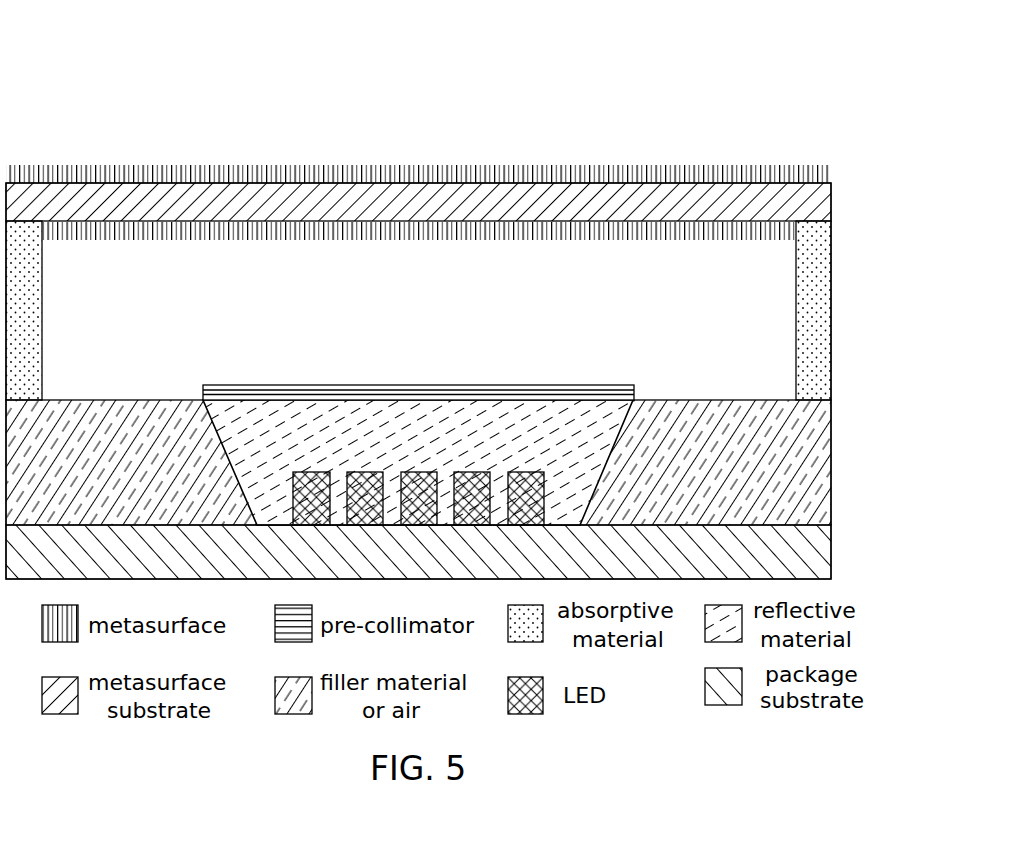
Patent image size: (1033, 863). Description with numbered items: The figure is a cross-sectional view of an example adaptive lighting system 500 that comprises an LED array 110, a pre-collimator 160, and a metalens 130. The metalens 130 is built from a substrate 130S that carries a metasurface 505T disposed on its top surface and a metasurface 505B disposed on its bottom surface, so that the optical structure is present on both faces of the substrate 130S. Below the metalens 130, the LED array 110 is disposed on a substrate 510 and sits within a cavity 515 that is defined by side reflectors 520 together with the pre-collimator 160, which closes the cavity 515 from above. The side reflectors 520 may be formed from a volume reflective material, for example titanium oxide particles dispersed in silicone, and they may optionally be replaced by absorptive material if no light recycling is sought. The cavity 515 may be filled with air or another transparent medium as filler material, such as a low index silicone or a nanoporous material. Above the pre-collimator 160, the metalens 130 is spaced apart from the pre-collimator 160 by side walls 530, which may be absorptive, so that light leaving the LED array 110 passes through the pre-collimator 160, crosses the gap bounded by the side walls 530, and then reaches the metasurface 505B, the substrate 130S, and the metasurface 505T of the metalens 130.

The adaptive lighting system 500 is at (145, 83).
The metalens 130 is at (838, 166).
The metasurface 505T is at (310, 177).
The substrate 130S is at (428, 207).
The metasurface 505B is at (532, 233).
The side walls 530 is at (32, 330).
The side reflectors 520 is at (165, 433).
The cavity 515 is at (313, 435).
The pre-collimator 160 is at (550, 395).
The LED array 110 is at (503, 448).
The substrate 510 is at (810, 560).